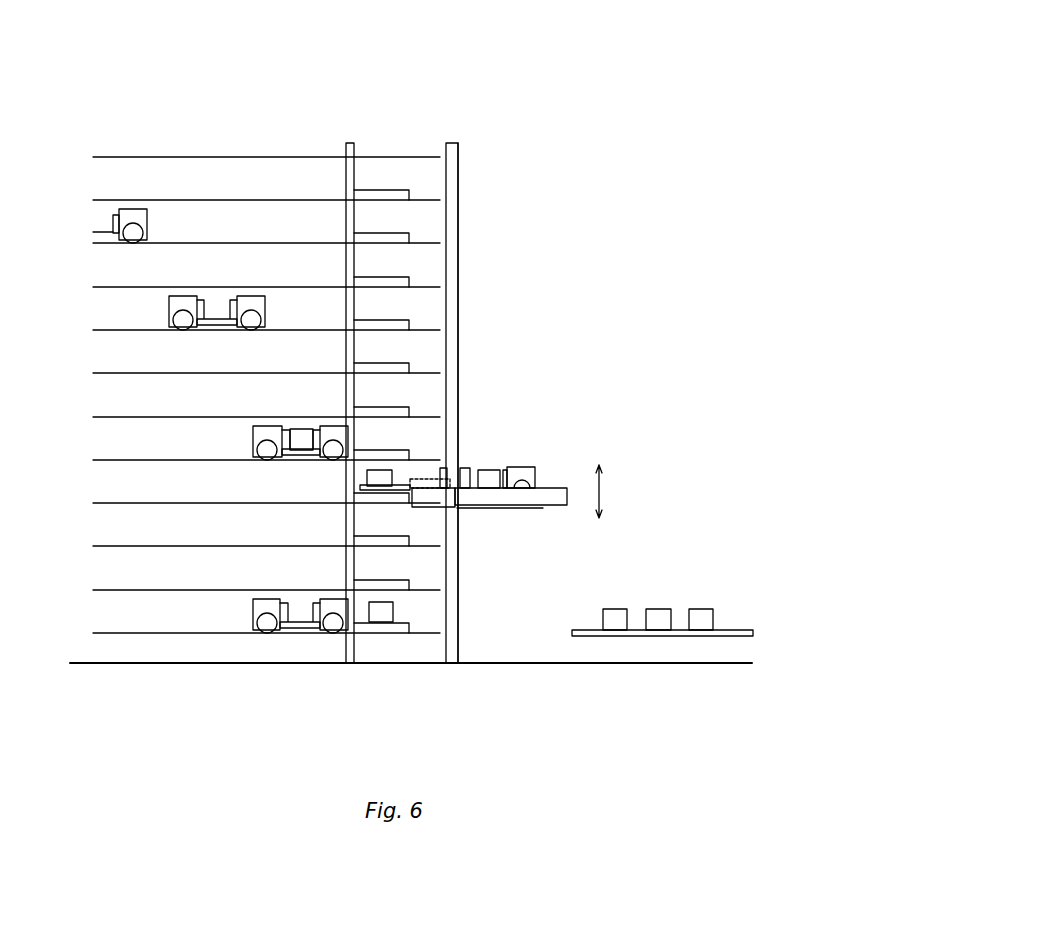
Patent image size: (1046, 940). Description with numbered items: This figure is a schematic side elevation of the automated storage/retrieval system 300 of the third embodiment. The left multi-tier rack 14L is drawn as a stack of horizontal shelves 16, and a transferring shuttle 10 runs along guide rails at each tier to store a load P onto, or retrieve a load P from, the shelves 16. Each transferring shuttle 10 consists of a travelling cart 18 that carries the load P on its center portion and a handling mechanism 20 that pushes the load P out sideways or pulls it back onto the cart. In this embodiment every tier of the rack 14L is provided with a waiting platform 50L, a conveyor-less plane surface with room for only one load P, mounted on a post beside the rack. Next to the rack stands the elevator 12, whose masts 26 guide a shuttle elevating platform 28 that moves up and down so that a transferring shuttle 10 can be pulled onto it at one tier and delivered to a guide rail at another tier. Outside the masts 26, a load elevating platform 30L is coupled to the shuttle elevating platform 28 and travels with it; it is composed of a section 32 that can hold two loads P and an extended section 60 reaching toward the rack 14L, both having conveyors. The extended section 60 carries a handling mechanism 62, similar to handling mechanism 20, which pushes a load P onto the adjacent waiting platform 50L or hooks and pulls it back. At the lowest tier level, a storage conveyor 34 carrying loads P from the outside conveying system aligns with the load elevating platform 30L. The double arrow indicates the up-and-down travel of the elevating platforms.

The automated storage/retrieval system 300 is at (549, 79).
The left multi-tier rack 14L is at (263, 157).
The shelves 16 is at (135, 286).
The left waiting platform 50L is at (378, 197).
The elevator 12 is at (459, 139).
The masts 26 is at (453, 340).
The transferring shuttle 10 is at (265, 302).
The travelling cart 18 is at (181, 300).
The handling mechanism 20 is at (205, 308).
The load P is at (303, 430).
The left load elevating platform 30L is at (553, 488).
The extended section 60 is at (433, 507).
The handling mechanism 62 is at (428, 480).
The shuttle elevating platform 28 is at (497, 508).
The section 32 is at (540, 500).
The storage conveyor 34 is at (680, 628).